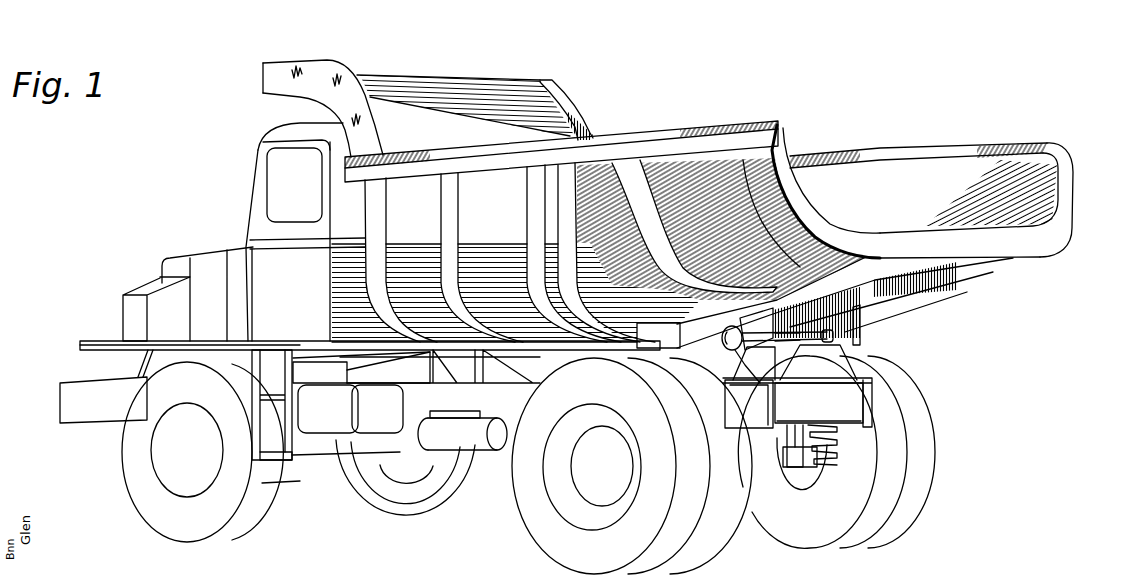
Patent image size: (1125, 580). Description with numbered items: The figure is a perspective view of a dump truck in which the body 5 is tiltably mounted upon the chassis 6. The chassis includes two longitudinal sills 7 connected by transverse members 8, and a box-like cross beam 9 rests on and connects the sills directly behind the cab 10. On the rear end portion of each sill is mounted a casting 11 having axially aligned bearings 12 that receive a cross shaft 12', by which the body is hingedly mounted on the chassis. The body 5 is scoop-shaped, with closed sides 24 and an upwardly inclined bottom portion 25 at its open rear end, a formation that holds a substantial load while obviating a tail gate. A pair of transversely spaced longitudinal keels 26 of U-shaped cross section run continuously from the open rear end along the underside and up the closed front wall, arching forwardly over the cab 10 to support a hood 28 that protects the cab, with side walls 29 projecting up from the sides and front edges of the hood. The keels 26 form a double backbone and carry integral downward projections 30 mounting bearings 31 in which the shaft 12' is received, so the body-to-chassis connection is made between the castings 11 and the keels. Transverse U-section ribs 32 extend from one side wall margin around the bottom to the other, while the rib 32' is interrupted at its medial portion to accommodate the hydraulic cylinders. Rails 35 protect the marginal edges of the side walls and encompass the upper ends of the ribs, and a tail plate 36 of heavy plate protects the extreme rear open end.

The body 5 is at (694, 125).
The chassis 6 is at (500, 462).
The longitudinal sills 7 is at (766, 390).
The transverse members 8 is at (815, 388).
The box-like cross beam 9 is at (457, 366).
The cab 10 is at (256, 164).
The casting 11 is at (724, 364).
The bearings 12 is at (789, 354).
The cross shaft 12' is at (794, 355).
The closed sides 24 is at (708, 165).
The upwardly inclined bottom portion 25 is at (813, 226).
The longitudinal keels 26 is at (822, 284).
The hood 28 is at (420, 92).
The side walls 29 is at (296, 76).
The downward projections 30 is at (860, 330).
The bearings 31 is at (726, 350).
The ribs 32 is at (536, 251).
The rib 32' is at (482, 257).
The rails 35 is at (622, 142).
The tail plate 36 is at (1013, 249).